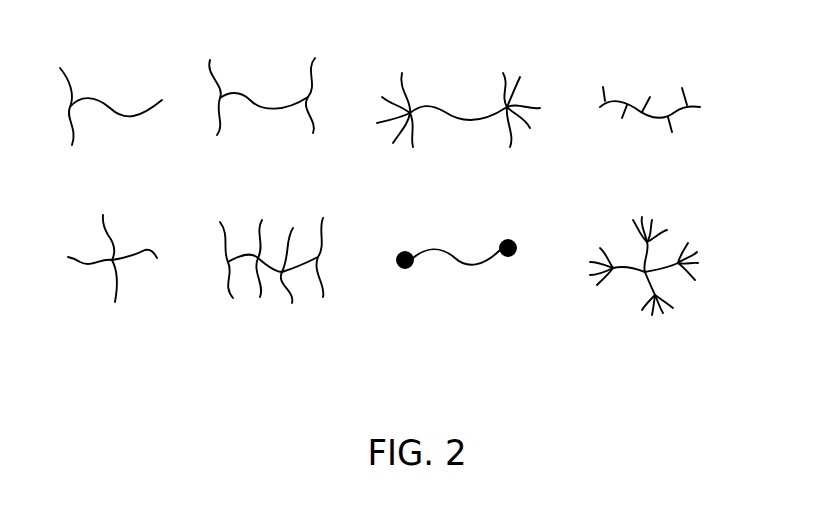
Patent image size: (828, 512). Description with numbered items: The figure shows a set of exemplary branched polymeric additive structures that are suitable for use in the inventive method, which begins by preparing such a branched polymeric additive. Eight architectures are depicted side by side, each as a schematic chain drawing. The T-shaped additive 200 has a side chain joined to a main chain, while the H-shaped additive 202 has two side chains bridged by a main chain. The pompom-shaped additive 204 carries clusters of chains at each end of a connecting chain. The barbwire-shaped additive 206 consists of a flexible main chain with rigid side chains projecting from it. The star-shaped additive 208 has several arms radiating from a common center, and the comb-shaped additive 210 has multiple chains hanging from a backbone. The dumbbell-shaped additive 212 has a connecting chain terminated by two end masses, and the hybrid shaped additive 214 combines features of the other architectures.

The T-shaped branched polymeric additive 200 is at (100, 78).
The H-shaped branched polymeric additive 202 is at (265, 68).
The pompom-shaped branched polymeric additive 204 is at (452, 75).
The barbwire-shaped branched polymeric additive 206 is at (645, 72).
The star-shaped branched polymeric additive 208 is at (88, 285).
The comb-shaped branched polymeric additive 210 is at (275, 298).
The dumbbell-shaped branched polymeric additive 212 is at (467, 297).
The hybrid shaped branched polymeric additive 214 is at (685, 297).